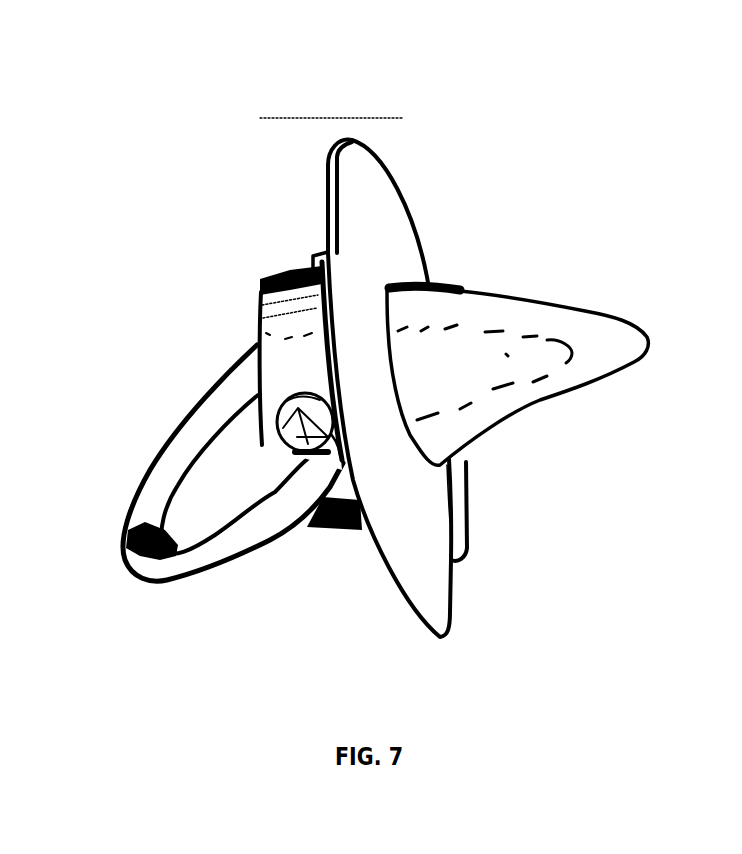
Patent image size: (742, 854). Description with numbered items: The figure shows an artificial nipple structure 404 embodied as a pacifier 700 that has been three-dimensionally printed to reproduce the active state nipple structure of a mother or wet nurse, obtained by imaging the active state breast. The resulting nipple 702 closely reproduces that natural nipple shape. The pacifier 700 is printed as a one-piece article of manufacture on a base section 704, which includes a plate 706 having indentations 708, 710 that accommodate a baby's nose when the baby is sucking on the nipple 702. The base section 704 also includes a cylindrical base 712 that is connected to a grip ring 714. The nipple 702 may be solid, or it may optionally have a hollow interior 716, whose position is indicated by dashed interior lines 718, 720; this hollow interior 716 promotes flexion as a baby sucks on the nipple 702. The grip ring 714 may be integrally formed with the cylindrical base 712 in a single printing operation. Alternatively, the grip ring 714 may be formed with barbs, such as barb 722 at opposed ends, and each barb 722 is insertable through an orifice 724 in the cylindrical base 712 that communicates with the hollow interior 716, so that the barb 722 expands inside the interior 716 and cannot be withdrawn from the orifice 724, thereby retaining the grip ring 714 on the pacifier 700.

The pacifier 700 is at (410, 346).
The artificial nipple structure 404 is at (410, 346).
The nipple 702 is at (621, 306).
The base section 704 is at (322, 117).
The plate 706 is at (407, 248).
The indentation 708 is at (328, 233).
The indentation 710 is at (456, 563).
The cylindrical base 712 is at (257, 323).
The grip ring 714 is at (179, 429).
The hollow interior 716 is at (257, 448).
The dashed interior line 718 is at (523, 327).
The dashed interior line 720 is at (547, 383).
The barb 722 is at (243, 398).
The orifice 724 is at (313, 527).